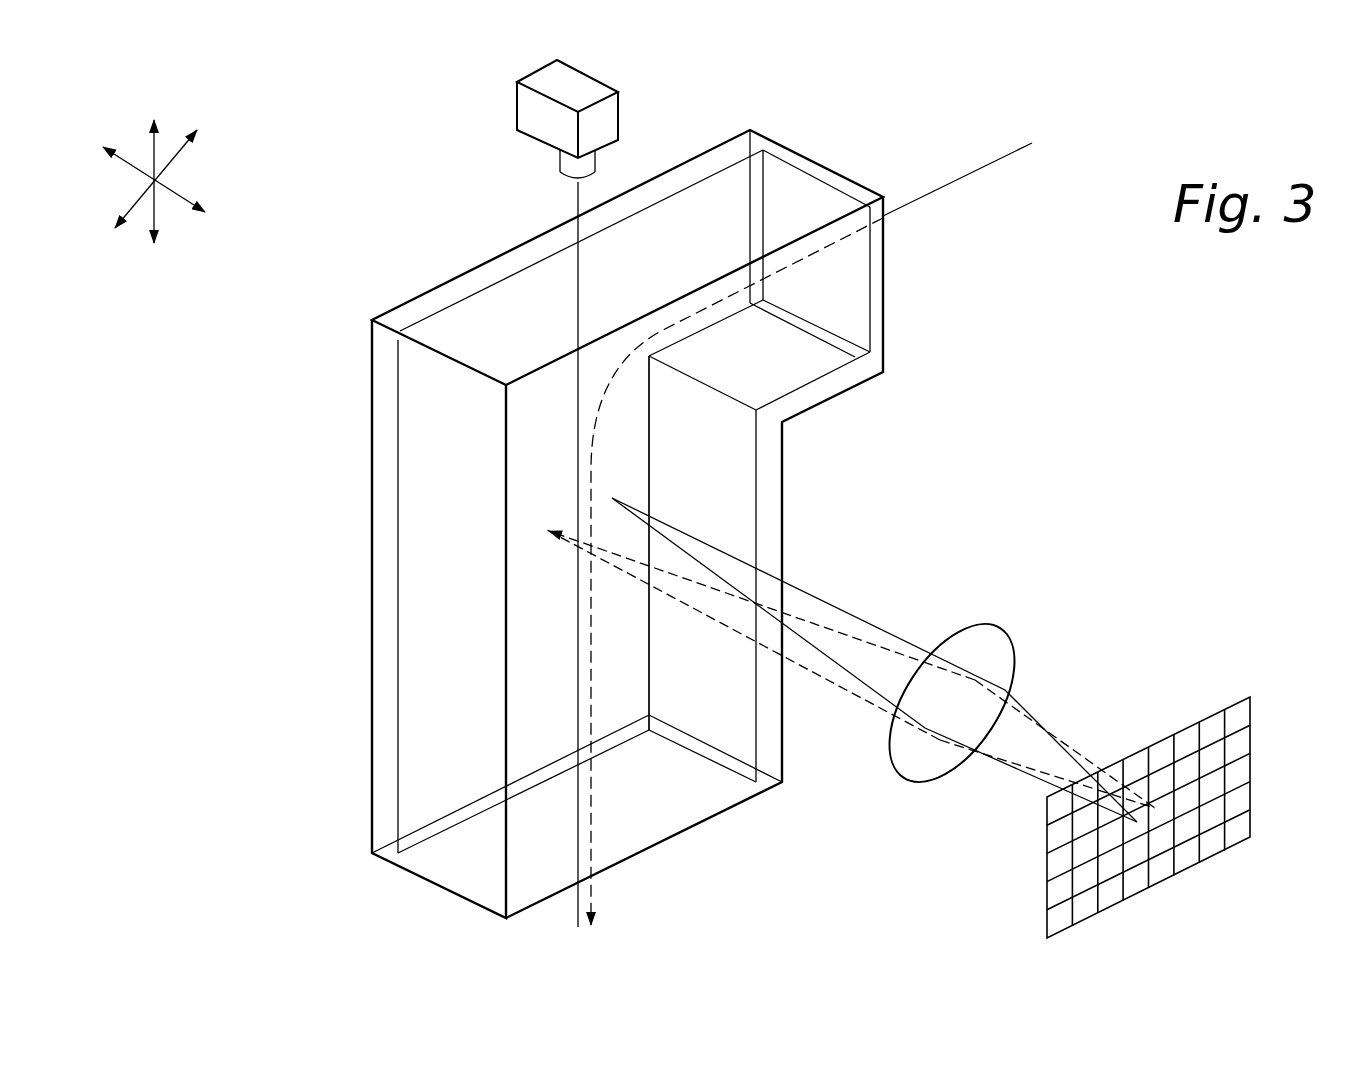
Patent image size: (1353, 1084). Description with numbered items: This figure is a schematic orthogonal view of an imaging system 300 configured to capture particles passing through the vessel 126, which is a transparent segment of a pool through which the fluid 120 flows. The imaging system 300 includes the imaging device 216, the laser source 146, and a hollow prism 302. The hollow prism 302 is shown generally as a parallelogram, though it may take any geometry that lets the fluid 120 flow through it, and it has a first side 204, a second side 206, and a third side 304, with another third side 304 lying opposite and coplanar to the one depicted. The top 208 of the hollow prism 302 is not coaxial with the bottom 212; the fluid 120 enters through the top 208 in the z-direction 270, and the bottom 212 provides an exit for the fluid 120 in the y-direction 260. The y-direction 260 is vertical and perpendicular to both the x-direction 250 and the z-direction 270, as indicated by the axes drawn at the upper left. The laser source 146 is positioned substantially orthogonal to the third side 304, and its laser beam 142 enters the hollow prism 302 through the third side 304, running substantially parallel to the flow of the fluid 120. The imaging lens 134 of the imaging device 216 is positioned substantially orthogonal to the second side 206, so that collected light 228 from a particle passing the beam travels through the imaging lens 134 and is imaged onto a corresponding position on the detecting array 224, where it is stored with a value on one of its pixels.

The fluid 120 is at (962, 175).
The vessel 126 is at (610, 511).
The imaging lens 134 is at (988, 622).
The laser beam 142 is at (576, 199).
The laser source 146 is at (515, 108).
The first side 204 is at (418, 425).
The second side 206 is at (737, 505).
The top 208 is at (842, 280).
The bottom 212 is at (648, 806).
The imaging device 216 is at (1057, 766).
The detecting array 224 is at (1045, 864).
The collected light 228 is at (892, 632).
The x-direction 250 is at (176, 193).
The y-direction 260 is at (158, 166).
The z-direction 270 is at (174, 166).
The imaging system 300 is at (547, 511).
The hollow prism 302 is at (610, 511).
The third side 304 is at (700, 203).